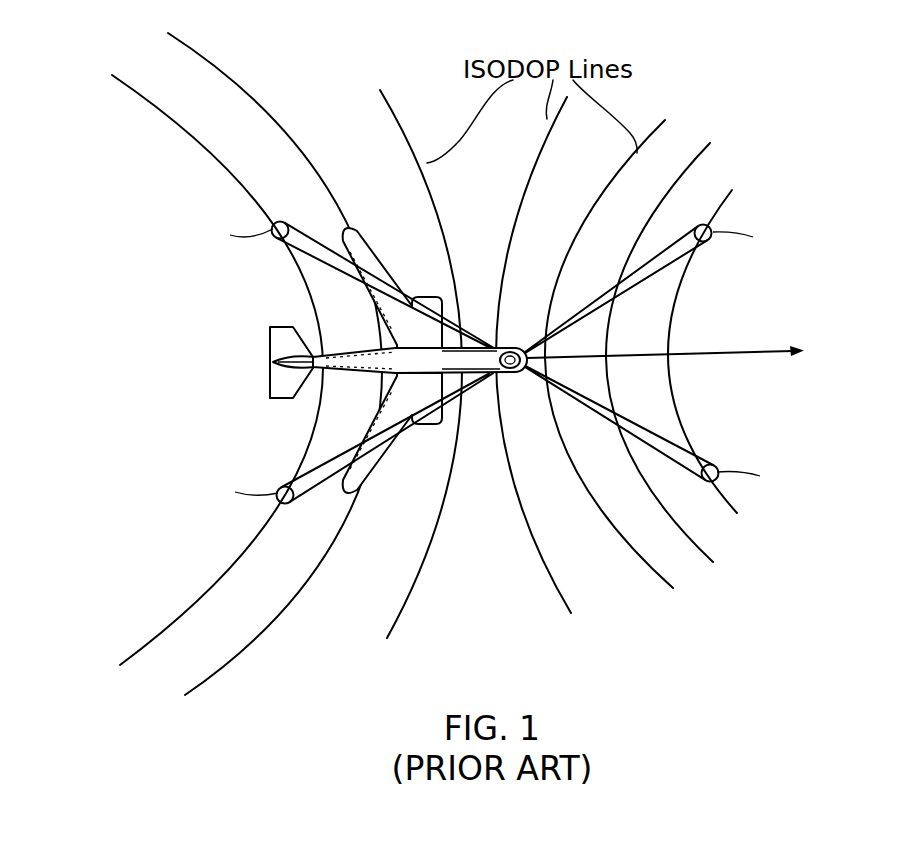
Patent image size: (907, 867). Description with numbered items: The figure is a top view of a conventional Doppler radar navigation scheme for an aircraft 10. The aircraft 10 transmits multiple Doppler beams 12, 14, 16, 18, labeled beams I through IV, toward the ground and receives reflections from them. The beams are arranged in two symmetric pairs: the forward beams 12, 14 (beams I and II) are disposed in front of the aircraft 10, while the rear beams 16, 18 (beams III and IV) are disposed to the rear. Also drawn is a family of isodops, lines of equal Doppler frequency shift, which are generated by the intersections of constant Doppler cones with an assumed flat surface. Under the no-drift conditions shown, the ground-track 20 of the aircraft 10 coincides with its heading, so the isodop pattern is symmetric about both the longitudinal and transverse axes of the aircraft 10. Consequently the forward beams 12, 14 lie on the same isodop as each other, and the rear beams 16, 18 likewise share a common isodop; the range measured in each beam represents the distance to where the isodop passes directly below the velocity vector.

The aircraft 10 is at (399, 282).
The Doppler beam 12 is at (605, 290).
The Doppler beam 14 is at (705, 463).
The Doppler beam 16 is at (288, 224).
The Doppler beam 18 is at (300, 502).
The ground-track 20 is at (735, 348).